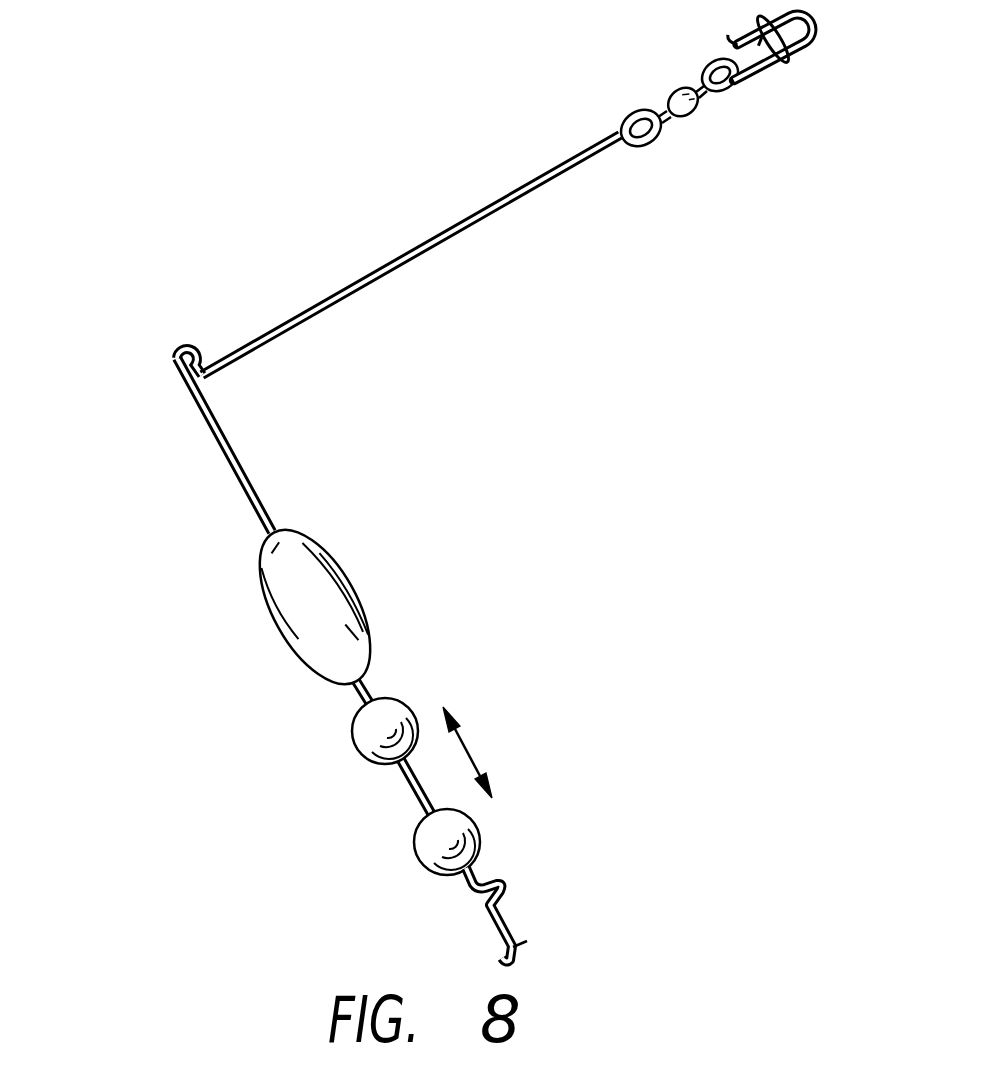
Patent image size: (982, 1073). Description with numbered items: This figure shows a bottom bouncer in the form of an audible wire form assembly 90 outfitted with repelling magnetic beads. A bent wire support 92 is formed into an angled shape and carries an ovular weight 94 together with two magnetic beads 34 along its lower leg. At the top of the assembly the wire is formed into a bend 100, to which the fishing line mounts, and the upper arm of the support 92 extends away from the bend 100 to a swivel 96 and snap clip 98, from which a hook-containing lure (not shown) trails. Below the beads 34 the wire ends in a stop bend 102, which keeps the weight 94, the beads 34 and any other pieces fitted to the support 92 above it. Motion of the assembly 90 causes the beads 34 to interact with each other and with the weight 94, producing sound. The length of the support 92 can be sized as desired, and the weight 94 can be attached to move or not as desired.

The audible wire form assembly 90 is at (206, 282).
The bent wire support 92 is at (220, 453).
The ovular weight 94 is at (337, 560).
The magnetic beads 34 is at (418, 828).
The swivel 96 is at (674, 92).
The snap clip 98 is at (815, 46).
The bend 100 is at (170, 354).
The stop bend 102 is at (498, 886).